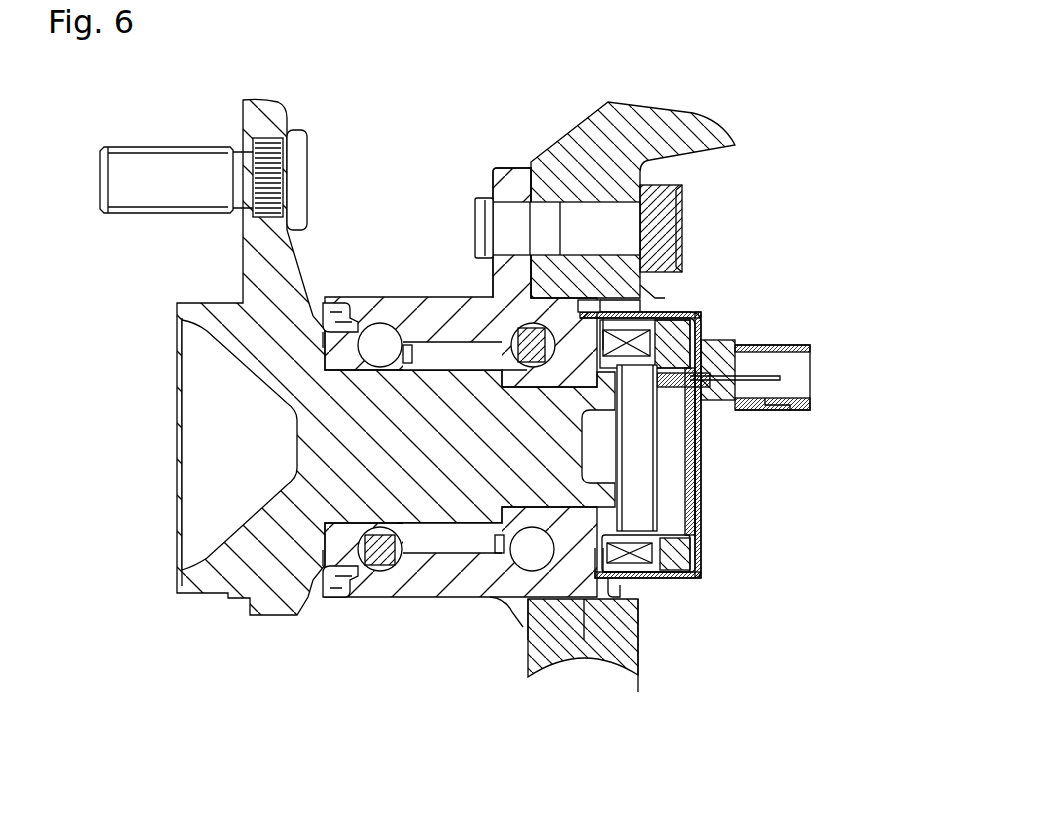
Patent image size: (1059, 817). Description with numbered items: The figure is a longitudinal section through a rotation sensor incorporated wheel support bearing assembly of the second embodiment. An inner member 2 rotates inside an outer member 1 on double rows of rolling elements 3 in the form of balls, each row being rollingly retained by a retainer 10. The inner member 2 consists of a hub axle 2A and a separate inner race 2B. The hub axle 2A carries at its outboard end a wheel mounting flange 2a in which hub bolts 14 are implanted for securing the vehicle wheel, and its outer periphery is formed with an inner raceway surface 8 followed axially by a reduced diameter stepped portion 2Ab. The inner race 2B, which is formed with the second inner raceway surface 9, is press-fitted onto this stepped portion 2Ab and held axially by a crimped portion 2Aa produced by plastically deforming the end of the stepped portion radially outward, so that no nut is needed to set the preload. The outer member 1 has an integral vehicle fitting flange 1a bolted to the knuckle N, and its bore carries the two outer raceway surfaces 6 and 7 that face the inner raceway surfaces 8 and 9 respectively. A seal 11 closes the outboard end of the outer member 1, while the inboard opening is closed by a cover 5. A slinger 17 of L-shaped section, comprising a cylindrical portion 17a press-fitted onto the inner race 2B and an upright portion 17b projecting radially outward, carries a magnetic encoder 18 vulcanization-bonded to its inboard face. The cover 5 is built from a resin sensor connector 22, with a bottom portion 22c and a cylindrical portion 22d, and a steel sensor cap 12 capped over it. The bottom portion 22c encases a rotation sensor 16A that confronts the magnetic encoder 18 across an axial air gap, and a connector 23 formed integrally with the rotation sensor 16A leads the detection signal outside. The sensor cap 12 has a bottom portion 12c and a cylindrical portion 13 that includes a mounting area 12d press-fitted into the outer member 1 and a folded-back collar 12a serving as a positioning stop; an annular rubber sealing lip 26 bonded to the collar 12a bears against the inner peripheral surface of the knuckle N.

The outer member 1 is at (430, 300).
The vehicle fitting flange 1a is at (513, 190).
The inner member 2 is at (283, 424).
The wheel mounting flange 2a is at (248, 100).
The hub axle 2A is at (348, 403).
The crimped portion 2Aa is at (700, 428).
The reduced diameter stepped portion 2Ab is at (600, 382).
The inner race 2B is at (687, 316).
The rolling elements 3 is at (495, 560).
The cover 5 is at (762, 326).
The outer raceway surface 6 is at (364, 328).
The outer raceway surface 7 is at (510, 332).
The inner raceway surface 8 is at (350, 342).
The inner raceway surface 9 is at (628, 312).
The retainer 10 is at (480, 573).
The seal 11 is at (318, 576).
The sensor cap 12 is at (701, 537).
The collar 12a is at (645, 240).
The bottom portion 12c is at (703, 565).
The mounting area 12d is at (640, 228).
The cylindrical portion 13 is at (752, 180).
The hub bolt 14 is at (152, 172).
The rotation sensor 16A is at (738, 407).
The slinger 17 is at (617, 722).
The cylindrical portion 17a is at (572, 560).
The upright portion 17b is at (598, 565).
The magnetic encoder 18 is at (600, 575).
The sensor connector 22 is at (701, 436).
The bottom portion 22c is at (701, 492).
The cylindrical portion 22d is at (680, 583).
The connector 23 is at (802, 367).
The sealing lip 26 is at (655, 292).
The knuckle N is at (580, 182).